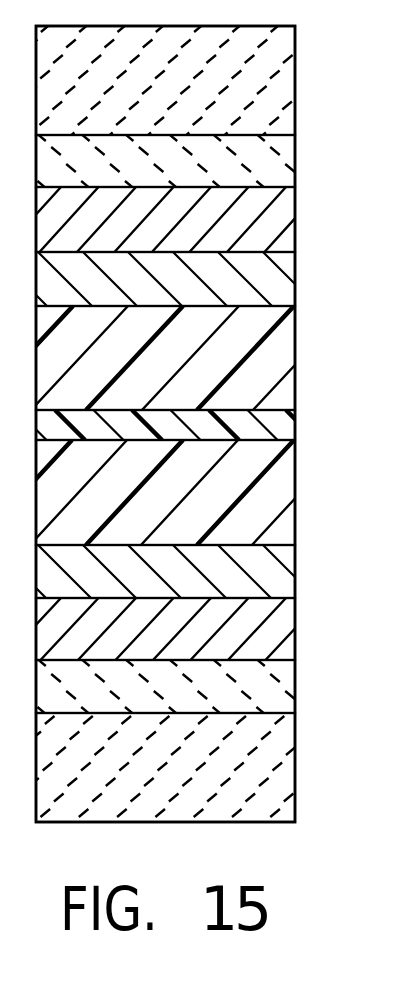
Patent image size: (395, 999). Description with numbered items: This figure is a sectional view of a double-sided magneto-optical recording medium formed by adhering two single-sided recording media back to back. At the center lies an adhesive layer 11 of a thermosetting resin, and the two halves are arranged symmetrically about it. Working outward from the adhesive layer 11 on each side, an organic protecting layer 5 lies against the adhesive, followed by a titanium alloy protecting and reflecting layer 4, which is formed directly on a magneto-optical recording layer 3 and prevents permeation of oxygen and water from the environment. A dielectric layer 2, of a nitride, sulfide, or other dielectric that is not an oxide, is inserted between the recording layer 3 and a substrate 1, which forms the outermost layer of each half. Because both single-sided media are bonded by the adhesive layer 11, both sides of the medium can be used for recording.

The substrate 1 is at (293, 74).
The dielectric layer 2 is at (293, 172).
The magneto-optical recording layer 3 is at (293, 210).
The titanium alloy protecting and reflecting layer 4 is at (293, 280).
The organic protecting layer 5 is at (280, 340).
The adhesive layer 11 is at (287, 428).